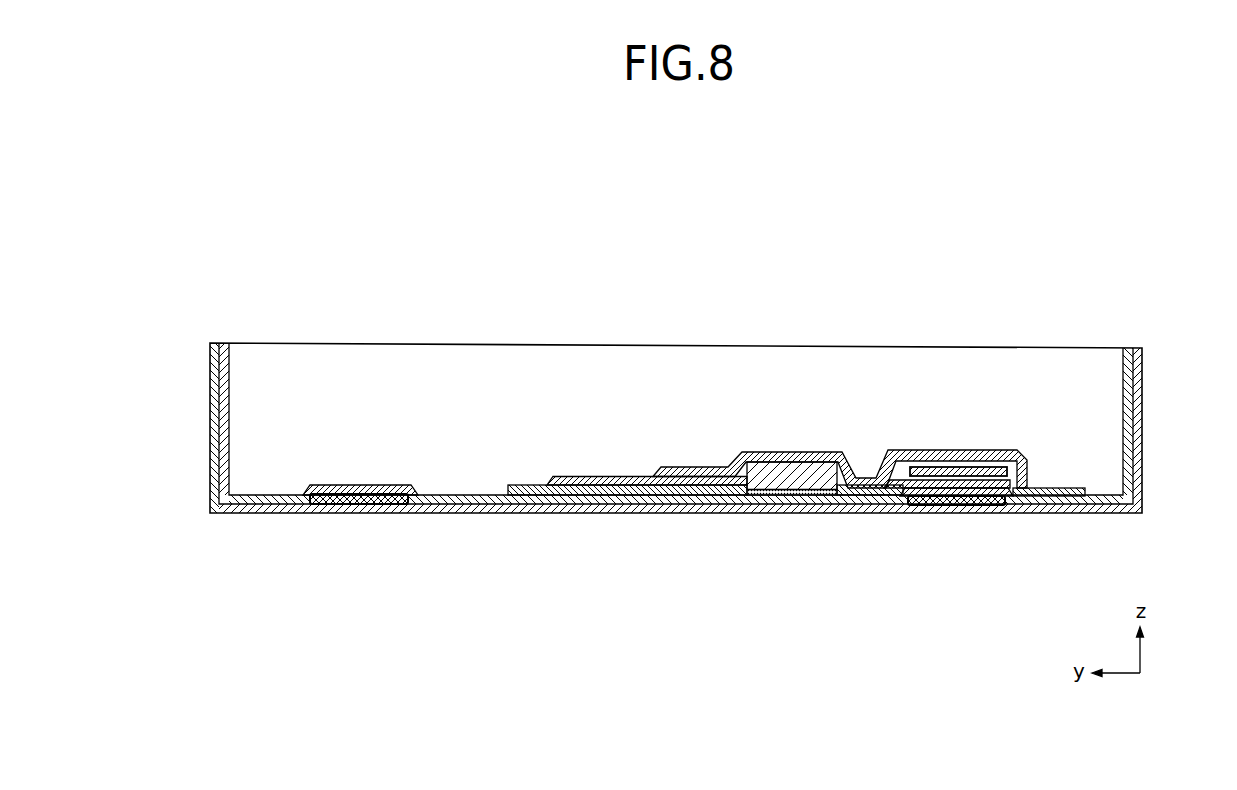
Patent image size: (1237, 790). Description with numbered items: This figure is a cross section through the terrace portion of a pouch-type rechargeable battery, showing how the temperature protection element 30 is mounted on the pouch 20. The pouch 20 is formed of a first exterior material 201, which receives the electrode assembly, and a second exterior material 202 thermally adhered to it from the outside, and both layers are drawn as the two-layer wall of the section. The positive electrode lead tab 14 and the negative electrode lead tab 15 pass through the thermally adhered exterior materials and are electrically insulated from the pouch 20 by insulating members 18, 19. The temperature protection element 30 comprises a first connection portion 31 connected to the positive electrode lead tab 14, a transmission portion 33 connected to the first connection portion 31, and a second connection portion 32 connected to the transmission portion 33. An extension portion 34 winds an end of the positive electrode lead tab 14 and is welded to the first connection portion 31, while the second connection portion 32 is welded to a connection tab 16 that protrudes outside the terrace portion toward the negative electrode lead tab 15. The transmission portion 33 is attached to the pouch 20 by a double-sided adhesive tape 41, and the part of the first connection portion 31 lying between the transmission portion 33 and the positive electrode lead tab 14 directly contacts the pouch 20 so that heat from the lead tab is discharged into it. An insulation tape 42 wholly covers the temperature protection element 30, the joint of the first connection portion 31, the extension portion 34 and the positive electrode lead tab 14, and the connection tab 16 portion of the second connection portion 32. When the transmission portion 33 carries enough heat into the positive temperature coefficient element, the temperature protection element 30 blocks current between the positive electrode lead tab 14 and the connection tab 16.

The positive electrode lead tab 14 is at (957, 507).
The negative electrode lead tab 15 is at (347, 504).
The connection tab 16 is at (625, 492).
The insulating member 18 is at (983, 497).
The insulating member 19 is at (378, 504).
The pouch 20 is at (696, 385).
The first exterior material 201 is at (1118, 397).
The second exterior material 202 is at (1142, 397).
The temperature protection element 30 is at (787, 372).
The first connection portion 31 is at (863, 470).
The second connection portion 32 is at (700, 465).
The transmission portion 33 is at (777, 467).
The extension portion 34 is at (877, 496).
The double-sided adhesive tape 41 is at (780, 495).
The insulation tape 42 is at (965, 455).